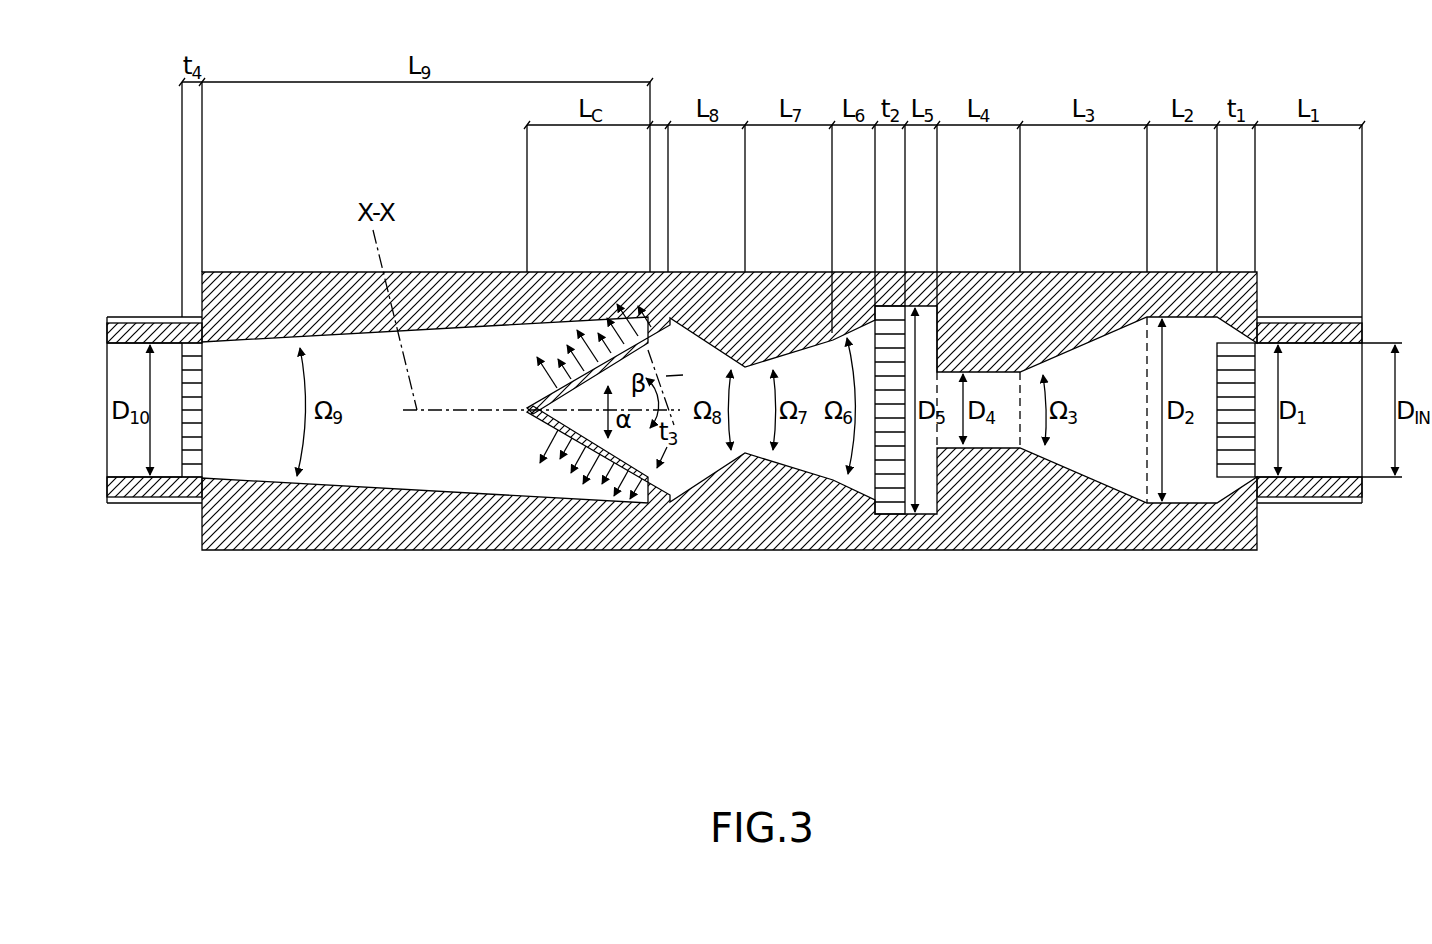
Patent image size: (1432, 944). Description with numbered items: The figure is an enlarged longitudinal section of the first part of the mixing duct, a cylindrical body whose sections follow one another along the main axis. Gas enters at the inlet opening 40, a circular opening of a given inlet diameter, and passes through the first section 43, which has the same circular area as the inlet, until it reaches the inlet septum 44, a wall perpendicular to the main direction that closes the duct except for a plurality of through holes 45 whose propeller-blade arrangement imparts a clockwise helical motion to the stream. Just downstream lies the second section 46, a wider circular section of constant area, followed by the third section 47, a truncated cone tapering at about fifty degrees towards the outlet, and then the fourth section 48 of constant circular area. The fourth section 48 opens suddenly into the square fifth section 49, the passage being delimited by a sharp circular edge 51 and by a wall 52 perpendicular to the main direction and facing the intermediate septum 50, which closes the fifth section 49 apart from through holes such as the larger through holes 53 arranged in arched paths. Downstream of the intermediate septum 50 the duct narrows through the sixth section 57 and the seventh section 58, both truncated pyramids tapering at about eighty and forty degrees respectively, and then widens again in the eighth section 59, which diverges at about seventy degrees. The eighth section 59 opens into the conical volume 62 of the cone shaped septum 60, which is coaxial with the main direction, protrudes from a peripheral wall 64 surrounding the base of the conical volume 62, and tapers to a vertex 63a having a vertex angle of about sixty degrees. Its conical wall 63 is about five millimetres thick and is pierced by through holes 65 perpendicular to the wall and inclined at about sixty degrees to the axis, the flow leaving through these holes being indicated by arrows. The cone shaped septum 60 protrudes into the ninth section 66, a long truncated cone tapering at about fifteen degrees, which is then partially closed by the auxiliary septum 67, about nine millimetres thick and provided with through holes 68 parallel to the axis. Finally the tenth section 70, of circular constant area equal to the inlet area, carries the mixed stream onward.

The inlet opening 40 is at (1360, 445).
The first section 43 is at (1325, 425).
The inlet septum 44 is at (1238, 455).
The through holes 45 is at (1225, 380).
The second section 46 is at (1180, 462).
The third section 47 is at (1100, 425).
The fourth section 48 is at (1000, 413).
The fifth section 49 is at (925, 323).
The intermediate septum 50 is at (900, 516).
The sharp circular edge 51 is at (950, 448).
The wall 52 is at (927, 495).
The larger through holes 53 is at (892, 490).
The sixth section 57 is at (862, 347).
The seventh section 58 is at (752, 362).
The eighth section 59 is at (712, 360).
The cone shaped septum 60 is at (600, 466).
The conical volume 62 is at (620, 470).
The conical wall 63 is at (625, 345).
The vertex 63a is at (505, 430).
The peripheral wall 64 is at (655, 492).
The through holes 65 is at (530, 442).
The ninth section 66 is at (360, 462).
The auxiliary septum 67 is at (205, 365).
The through holes 68 is at (197, 412).
The tenth section 70 is at (125, 452).